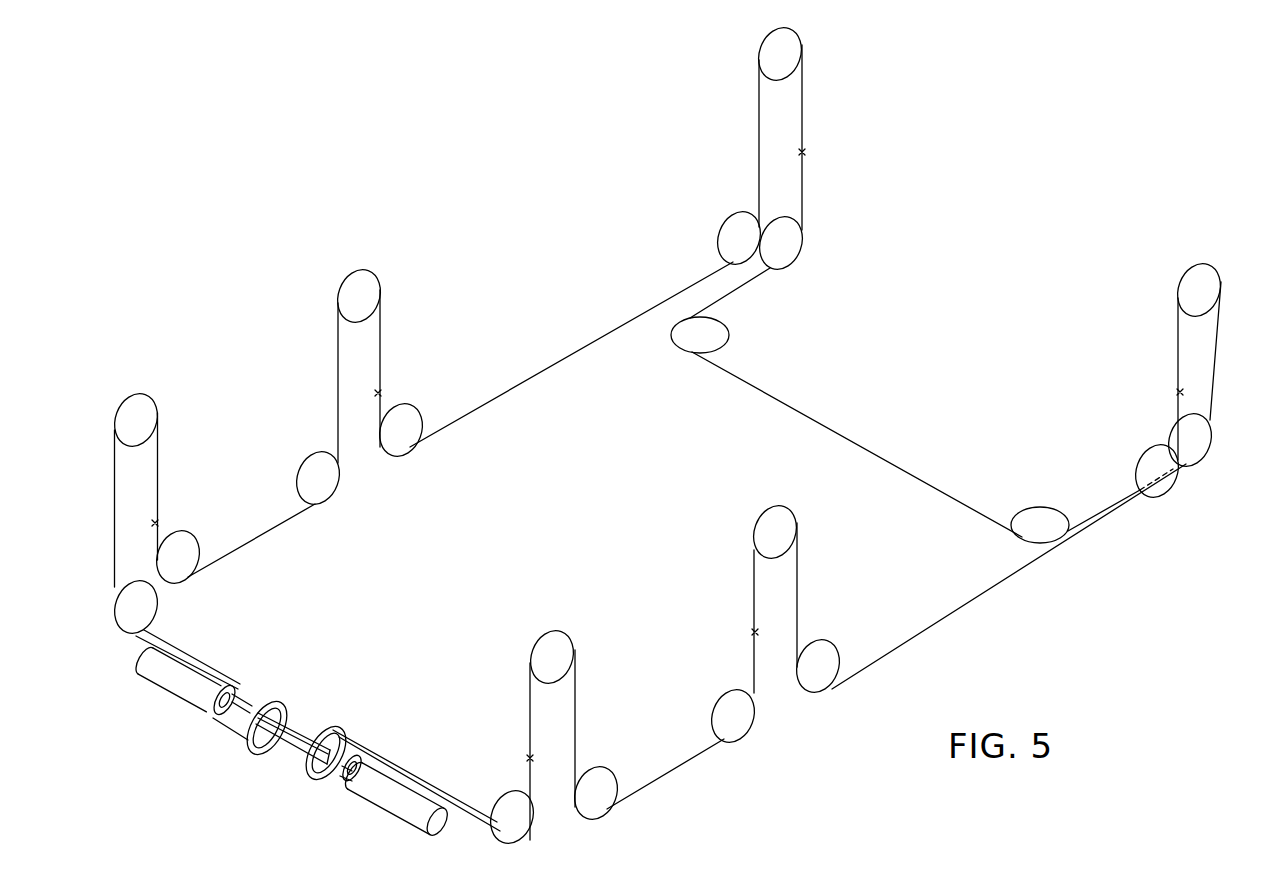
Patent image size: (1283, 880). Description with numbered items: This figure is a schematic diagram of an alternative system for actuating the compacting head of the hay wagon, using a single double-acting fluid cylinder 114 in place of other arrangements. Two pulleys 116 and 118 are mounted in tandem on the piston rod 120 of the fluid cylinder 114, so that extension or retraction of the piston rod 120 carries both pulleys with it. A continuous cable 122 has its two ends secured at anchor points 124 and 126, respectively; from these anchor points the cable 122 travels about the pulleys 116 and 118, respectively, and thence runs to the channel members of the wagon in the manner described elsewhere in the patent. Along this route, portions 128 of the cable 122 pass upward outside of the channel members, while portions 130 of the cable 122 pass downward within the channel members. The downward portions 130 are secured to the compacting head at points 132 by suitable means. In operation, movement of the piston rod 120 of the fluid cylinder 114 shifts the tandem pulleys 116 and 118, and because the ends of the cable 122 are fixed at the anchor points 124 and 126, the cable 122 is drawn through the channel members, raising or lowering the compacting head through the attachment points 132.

The double-acting fluid cylinder 114 is at (165, 694).
The pulley 116 is at (274, 702).
The pulley 118 is at (321, 724).
The piston rod 120 is at (243, 697).
The continuous cable 122 is at (397, 773).
The anchor point 124 is at (230, 728).
The anchor point 126 is at (349, 790).
The cable portions 128 is at (114, 490).
The cable portions 130 is at (158, 463).
The attachment points 132 is at (157, 522).